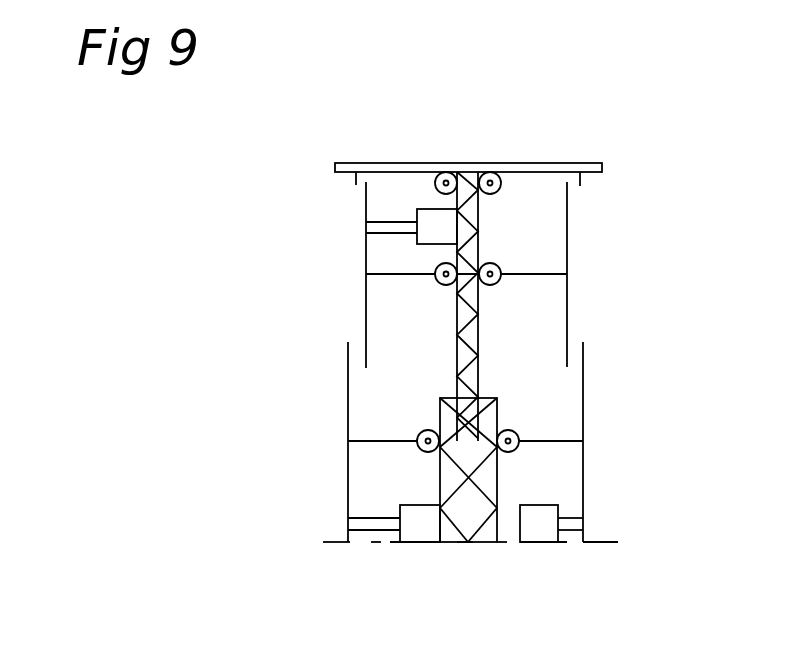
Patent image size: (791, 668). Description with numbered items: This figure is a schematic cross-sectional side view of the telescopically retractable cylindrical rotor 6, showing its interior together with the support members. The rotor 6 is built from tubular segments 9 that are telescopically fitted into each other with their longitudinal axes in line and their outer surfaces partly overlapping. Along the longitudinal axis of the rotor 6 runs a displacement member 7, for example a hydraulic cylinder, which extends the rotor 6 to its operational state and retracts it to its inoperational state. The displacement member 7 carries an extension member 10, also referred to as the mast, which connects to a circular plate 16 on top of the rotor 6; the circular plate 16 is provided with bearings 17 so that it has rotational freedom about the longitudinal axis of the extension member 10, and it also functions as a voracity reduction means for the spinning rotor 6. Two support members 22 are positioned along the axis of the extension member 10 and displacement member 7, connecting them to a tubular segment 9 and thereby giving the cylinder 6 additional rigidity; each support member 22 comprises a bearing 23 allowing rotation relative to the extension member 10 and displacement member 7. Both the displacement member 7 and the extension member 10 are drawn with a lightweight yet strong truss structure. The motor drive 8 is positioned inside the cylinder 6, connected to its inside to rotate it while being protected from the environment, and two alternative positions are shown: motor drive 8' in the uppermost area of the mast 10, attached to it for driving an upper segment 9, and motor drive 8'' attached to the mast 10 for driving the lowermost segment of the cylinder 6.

The cylindrical rotor 6 is at (588, 130).
The circular plate 16 is at (411, 163).
The bearings 17 is at (493, 172).
The extension member 10 is at (478, 233).
The tubular segments 9 is at (350, 406).
The support members 22 is at (383, 441).
The displacement member 7 is at (472, 490).
The bearing 23 is at (492, 283).
The motor drive 8' is at (387, 222).
The motor drive 8'' is at (394, 551).
The motor drive 8 is at (551, 548).